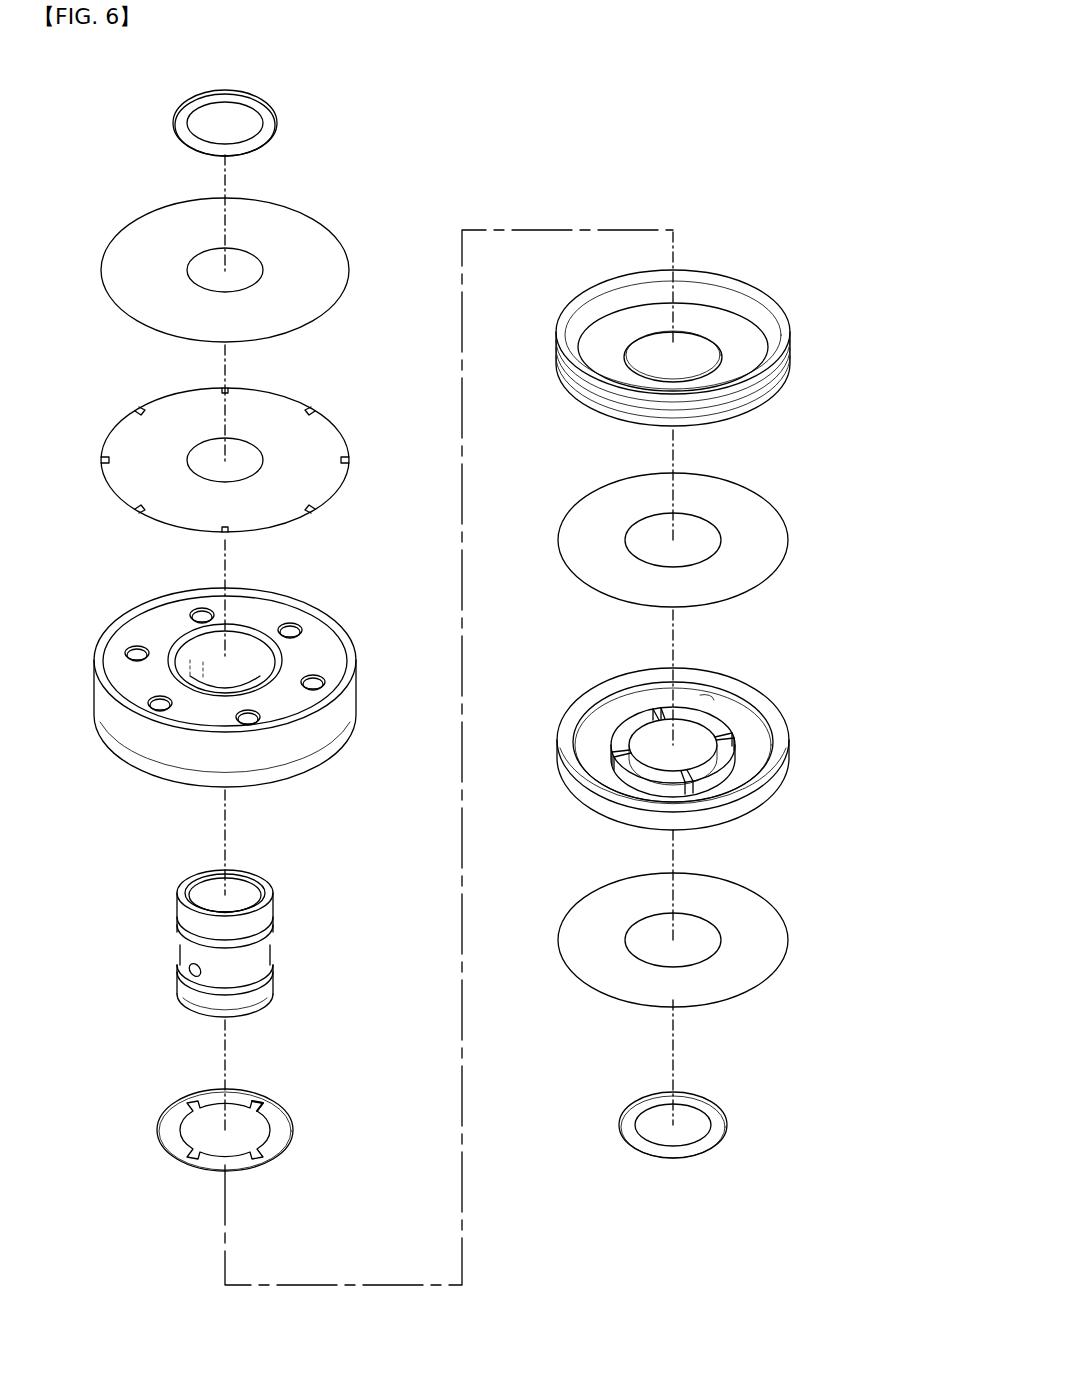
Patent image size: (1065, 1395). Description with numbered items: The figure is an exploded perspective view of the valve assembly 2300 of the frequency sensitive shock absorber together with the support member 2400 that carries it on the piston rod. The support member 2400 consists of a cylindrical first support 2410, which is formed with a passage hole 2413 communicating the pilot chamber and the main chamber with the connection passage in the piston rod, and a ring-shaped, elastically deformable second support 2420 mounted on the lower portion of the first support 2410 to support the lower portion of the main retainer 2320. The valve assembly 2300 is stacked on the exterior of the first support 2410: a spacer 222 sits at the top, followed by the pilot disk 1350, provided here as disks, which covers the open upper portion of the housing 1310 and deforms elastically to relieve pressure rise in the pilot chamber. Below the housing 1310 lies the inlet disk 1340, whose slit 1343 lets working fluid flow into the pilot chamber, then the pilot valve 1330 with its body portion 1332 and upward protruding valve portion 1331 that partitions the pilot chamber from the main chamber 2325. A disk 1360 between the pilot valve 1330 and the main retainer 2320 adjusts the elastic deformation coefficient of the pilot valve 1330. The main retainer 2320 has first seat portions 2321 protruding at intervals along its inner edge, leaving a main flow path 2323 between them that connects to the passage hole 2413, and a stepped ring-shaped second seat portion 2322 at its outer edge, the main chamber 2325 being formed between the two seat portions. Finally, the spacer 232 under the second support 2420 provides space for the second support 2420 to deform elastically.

The valve assembly 2300 is at (95, 111).
The spacer 222 is at (272, 122).
The pilot disk 1350 is at (364, 458).
The housing 1310 is at (343, 632).
The first support 2410 is at (230, 943).
The support member 2400 is at (484, 943).
The passage hole 2413 is at (190, 971).
The slit 1343 is at (265, 1108).
The inlet disk 1340 is at (280, 1121).
The valve portion 1331 is at (780, 322).
The body portion 1332 is at (752, 356).
The pilot valve 1330 is at (739, 348).
The disk 1360 is at (777, 520).
The main flow path 2323 is at (657, 705).
The main chamber 2325 is at (707, 692).
The first seat portion 2321 is at (730, 712).
The second seat portion 2322 is at (778, 720).
The main retainer 2320 is at (719, 738).
The second support 2420 is at (775, 917).
The spacer 232 is at (720, 1122).